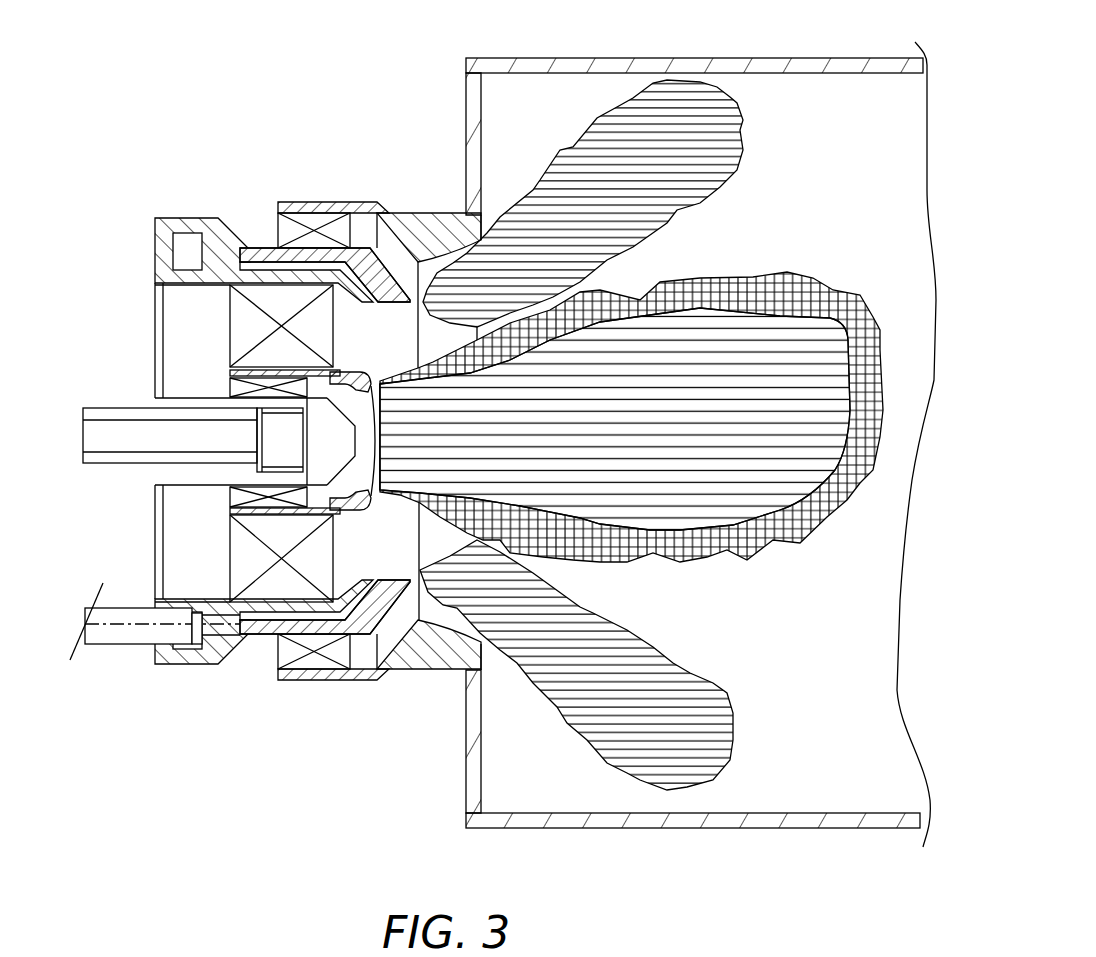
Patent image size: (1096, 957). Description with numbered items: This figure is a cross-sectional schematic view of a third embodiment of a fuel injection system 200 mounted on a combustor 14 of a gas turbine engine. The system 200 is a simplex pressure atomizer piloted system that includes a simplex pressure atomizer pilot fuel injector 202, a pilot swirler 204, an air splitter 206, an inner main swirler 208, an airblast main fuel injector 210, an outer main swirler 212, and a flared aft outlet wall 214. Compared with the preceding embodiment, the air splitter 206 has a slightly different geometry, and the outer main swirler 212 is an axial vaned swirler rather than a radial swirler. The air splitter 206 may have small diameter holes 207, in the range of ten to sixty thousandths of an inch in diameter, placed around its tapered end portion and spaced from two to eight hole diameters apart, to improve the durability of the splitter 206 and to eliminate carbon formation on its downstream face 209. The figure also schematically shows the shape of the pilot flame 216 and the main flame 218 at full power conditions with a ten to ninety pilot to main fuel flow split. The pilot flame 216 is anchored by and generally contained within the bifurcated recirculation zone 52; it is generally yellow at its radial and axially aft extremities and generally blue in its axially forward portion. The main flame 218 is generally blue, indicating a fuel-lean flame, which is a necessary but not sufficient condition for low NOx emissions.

The combustor 14 is at (786, 57).
The bifurcated recirculation zone 52 is at (680, 260).
The fuel injection system 200 is at (177, 702).
The simplex pressure atomizer pilot fuel injector 202 is at (142, 452).
The pilot swirler 204 is at (230, 492).
The air splitter 206 is at (240, 548).
The small diameter holes 207 is at (346, 384).
The inner main swirler 208 is at (242, 333).
The downstream face 209 is at (372, 486).
The airblast main fuel injector 210 is at (265, 240).
The outer main swirler 212 is at (290, 236).
The flared aft outlet wall 214 is at (460, 622).
The pilot flame 216 is at (842, 296).
The main flame 218 is at (742, 113).